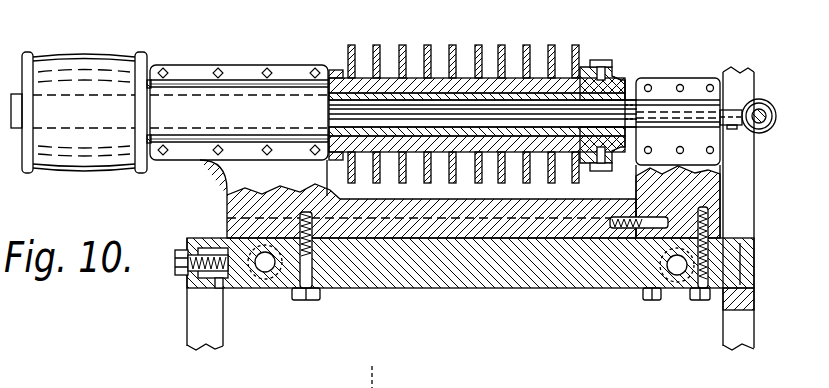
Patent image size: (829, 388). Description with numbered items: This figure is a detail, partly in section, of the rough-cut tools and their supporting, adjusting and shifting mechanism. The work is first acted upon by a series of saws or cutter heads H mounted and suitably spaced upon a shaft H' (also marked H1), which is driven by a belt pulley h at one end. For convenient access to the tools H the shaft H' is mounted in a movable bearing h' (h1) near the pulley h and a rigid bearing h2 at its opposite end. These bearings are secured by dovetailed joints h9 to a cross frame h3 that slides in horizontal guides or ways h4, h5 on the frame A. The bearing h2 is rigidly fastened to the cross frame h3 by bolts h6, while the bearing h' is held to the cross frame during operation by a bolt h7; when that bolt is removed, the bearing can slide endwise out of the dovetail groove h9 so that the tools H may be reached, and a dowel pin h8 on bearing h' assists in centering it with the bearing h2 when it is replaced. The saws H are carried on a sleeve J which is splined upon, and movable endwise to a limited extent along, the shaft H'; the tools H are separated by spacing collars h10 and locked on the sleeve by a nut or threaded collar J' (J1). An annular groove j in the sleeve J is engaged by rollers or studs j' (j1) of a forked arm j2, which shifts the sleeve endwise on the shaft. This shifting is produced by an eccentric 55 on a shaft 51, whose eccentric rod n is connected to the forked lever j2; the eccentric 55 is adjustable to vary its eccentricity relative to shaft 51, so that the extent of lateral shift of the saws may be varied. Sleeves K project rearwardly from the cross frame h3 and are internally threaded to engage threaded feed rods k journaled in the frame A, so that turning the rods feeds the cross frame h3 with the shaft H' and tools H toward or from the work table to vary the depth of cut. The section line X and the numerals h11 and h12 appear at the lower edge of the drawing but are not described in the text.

The belt pulley h is at (81, 126).
The movable bearing h' is at (239, 132).
The movable bearing h1 is at (239, 132).
The saws or cutter heads H is at (483, 82).
The sleeve J is at (327, 95).
The spacing collars h10 is at (387, 72).
The annular groove j is at (602, 98).
The forked arm j2 is at (608, 59).
The rollers or studs j' is at (614, 99).
The rollers or studs j1 is at (614, 99).
The nut or threaded collar J' is at (633, 80).
The nut or threaded collar J1 is at (633, 80).
The shaft H' is at (651, 87).
The shaft H1 is at (651, 87).
The rigid bearing h2 is at (686, 86).
The frame A is at (734, 72).
The eccentric rod n is at (729, 112).
The eccentric 55 is at (751, 130).
The shaft 51 is at (760, 124).
The dovetailed joints h9 is at (406, 226).
The cross frame h3 is at (446, 290).
The horizontal guide or way h5 is at (222, 292).
The threaded feed rods k is at (269, 272).
The sleeves K is at (262, 290).
The bolt h7 is at (308, 300).
The dowel pin h8 is at (631, 230).
The bolts h6 is at (653, 300).
The horizontal guide or way h4 is at (712, 302).
The section line X is at (369, 367).
The bracket h11 is at (388, 385).
The bracket h12 is at (324, 385).